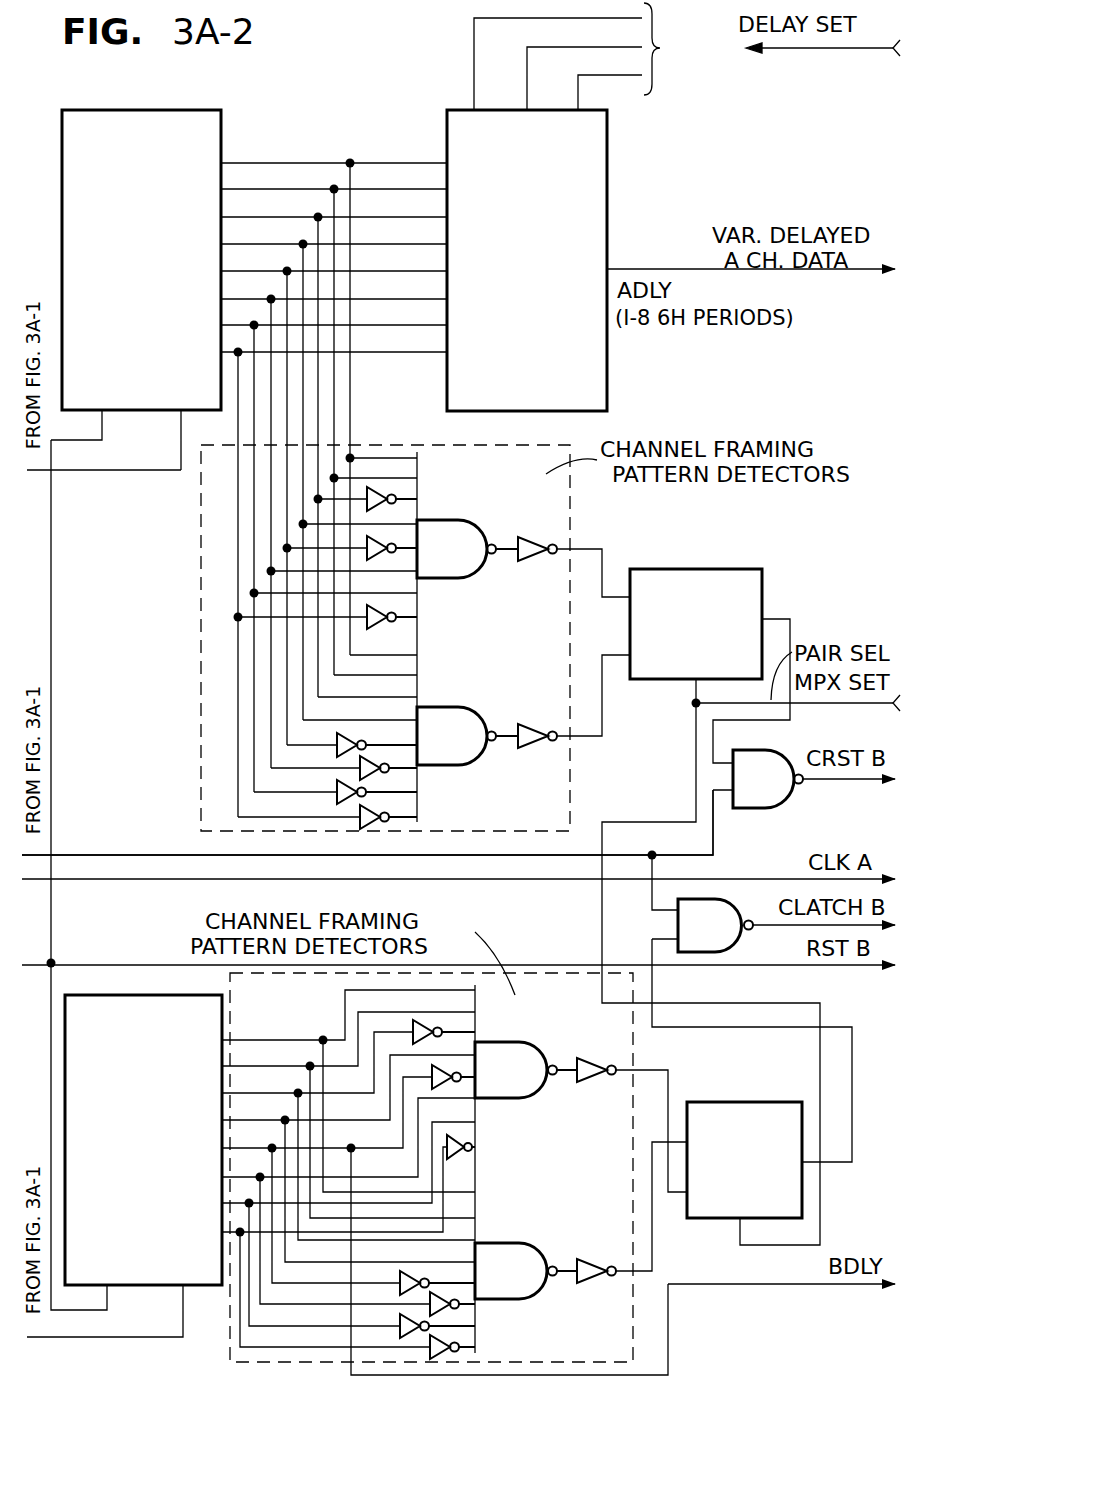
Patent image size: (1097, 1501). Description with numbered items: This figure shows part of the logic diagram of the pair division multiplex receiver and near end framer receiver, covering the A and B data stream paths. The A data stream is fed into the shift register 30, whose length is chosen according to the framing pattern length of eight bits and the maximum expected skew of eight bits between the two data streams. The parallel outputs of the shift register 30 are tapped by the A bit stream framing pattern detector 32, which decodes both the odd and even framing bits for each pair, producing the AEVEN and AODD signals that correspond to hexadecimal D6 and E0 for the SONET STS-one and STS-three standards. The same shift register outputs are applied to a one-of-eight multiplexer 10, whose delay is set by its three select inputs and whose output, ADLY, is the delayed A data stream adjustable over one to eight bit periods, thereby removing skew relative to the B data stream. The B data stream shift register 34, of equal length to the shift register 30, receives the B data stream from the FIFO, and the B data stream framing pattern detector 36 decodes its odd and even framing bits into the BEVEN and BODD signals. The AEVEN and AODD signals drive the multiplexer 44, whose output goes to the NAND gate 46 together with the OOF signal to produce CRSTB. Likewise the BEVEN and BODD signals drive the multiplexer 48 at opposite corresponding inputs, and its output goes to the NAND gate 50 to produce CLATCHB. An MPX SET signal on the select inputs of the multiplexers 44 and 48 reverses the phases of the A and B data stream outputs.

The shift register 30 is at (128, 109).
The multiplexer (variable delay) 10 is at (516, 418).
The A bit stream framing pattern detector 32 is at (210, 570).
The multiplexer 44 is at (710, 568).
The NAND gate 46 is at (804, 779).
The NAND gate 50 is at (786, 925).
The B data stream shift register 34 is at (126, 996).
The B data stream framing pattern detector 36 is at (553, 987).
The multiplexer 48 is at (753, 1101).